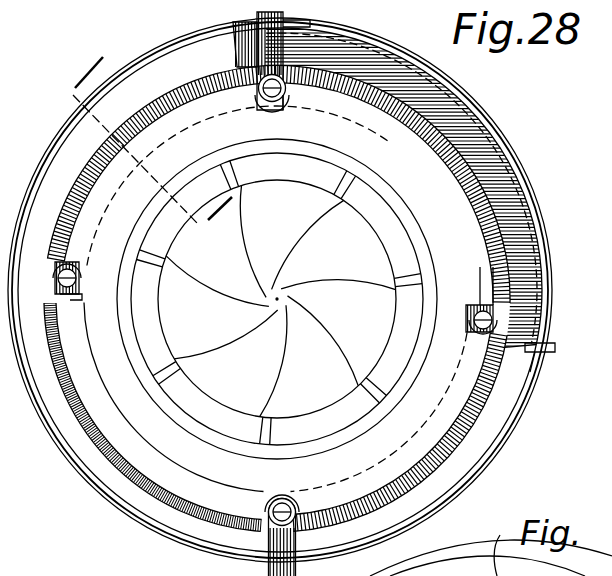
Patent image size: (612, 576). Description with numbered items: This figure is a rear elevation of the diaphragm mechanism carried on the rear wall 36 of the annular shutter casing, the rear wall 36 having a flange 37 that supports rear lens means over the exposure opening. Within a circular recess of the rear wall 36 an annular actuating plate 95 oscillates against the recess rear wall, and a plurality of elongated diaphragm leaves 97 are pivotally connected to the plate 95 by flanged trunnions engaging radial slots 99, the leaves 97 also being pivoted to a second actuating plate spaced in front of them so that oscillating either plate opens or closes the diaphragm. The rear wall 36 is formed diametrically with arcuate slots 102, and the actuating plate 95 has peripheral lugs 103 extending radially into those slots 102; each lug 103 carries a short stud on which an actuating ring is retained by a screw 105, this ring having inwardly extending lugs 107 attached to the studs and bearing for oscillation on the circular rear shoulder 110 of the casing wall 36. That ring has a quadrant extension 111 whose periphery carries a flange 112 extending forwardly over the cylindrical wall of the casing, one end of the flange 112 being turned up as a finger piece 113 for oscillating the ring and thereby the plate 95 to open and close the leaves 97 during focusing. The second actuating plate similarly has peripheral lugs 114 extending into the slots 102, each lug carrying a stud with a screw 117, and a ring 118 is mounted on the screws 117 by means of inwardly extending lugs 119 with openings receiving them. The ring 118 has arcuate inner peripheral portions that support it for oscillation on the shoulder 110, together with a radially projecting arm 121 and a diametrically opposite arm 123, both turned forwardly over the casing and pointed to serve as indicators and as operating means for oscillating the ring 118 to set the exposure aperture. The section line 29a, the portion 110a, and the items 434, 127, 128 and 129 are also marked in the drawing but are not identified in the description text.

In FIG. 28, the rear wall 36 is at (185, 66).
In FIG. 28, the ring 118 is at (160, 103).
In FIG. 28, the ring flange 110a is at (452, 428).
In FIG. 28, the flange 112 is at (444, 80).
In FIG. 28, the quadrant extension 111 is at (469, 133).
In FIG. 28, the radially projecting arm 121 is at (312, 22).
In FIG. 28, the arm 123 is at (289, 557).
In FIG. 28, the screw 117 is at (285, 82).
In FIG. 28, the peripheral lugs 114 is at (266, 102).
In FIG. 28, the inwardly extending lugs 119 is at (302, 96).
In FIG. 28, the pin 434 is at (292, 106).
In FIG. 28, the circular rear shoulder 110 is at (200, 104).
In FIG. 28, the arcuate slots 102 is at (455, 214).
In FIG. 28, the flange 37 is at (405, 375).
In FIG. 28, the annular plate 95 is at (312, 416).
In FIG. 28, the radial slots 99 is at (187, 378).
In FIG. 28, the diaphragm leaves 97 is at (338, 326).
In FIG. 28, the screw 105 is at (80, 268).
In FIG. 28, the peripheral lugs 103 is at (82, 284).
In FIG. 28, the inwardly extending lugs 107 is at (83, 297).
In FIG. 28, the finger piece 113 is at (548, 346).
In FIG. 28, the section line 29a is at (131, 153).
In FIG. 29, the outer ring 129 is at (548, 555).
In FIG. 29, the inner ring 127 is at (448, 550).
In FIG. 29, the connecting link 128 is at (482, 549).